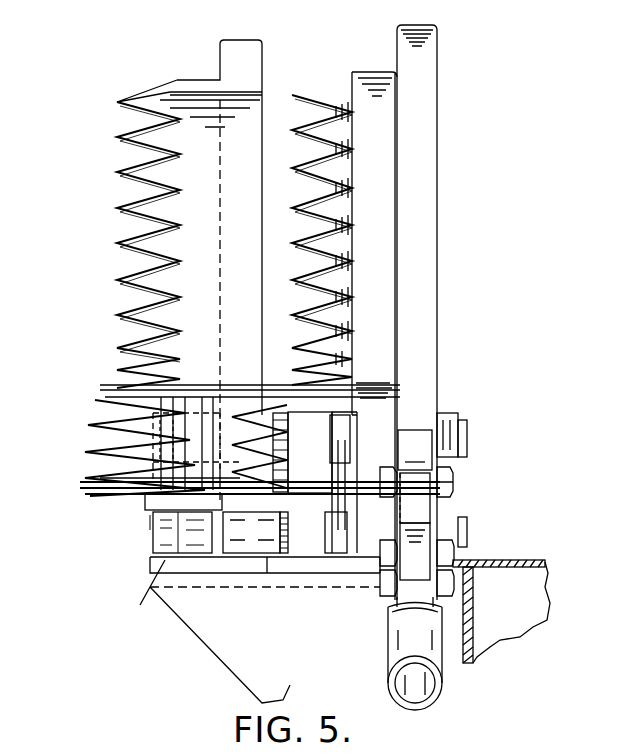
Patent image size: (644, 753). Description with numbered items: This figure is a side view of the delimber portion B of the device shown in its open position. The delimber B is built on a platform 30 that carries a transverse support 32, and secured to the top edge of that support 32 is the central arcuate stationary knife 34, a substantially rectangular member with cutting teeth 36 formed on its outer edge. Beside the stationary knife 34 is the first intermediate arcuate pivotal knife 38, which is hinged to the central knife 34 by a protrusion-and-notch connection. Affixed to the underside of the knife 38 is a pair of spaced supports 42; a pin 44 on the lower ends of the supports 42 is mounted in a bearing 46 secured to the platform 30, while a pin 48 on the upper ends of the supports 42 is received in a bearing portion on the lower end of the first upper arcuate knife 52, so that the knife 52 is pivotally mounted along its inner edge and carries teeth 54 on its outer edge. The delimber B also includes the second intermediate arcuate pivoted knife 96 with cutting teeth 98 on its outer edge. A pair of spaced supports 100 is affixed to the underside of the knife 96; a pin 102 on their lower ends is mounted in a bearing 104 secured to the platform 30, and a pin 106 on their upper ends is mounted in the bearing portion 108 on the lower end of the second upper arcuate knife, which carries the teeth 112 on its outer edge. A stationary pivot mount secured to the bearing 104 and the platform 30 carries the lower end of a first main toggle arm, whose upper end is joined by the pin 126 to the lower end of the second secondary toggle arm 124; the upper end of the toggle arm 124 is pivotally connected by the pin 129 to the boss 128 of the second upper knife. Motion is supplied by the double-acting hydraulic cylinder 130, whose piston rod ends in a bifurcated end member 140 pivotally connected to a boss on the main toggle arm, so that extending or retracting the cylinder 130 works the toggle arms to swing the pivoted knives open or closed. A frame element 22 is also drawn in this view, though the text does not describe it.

The frame 22 is at (525, 560).
The base plate 30 is at (270, 575).
The bearing block 32 is at (251, 532).
The plate 34 is at (128, 508).
The plate 36 is at (94, 497).
The shaft 38 is at (98, 452).
The plate 42 is at (120, 470).
The bearing 44 is at (152, 532).
The base corner 46 is at (202, 631).
The spring seat 48 is at (100, 424).
The guide post 52 is at (220, 66).
The compression spring 54 is at (134, 99).
The bracket 96 is at (314, 452).
The plate 98 is at (245, 400).
The bracket arm 100 is at (332, 477).
The plate 102 is at (467, 533).
The nut 104 is at (371, 558).
The plate 106 is at (467, 437).
The bushing 108 is at (443, 413).
The compression spring 112 is at (312, 90).
The sleeve 124 is at (422, 505).
The frame flange 126 is at (470, 567).
The nut 128 is at (428, 440).
The nut 129 is at (448, 480).
The shaft 130 is at (440, 663).
The frame web 140 is at (445, 604).
The guide bar B is at (459, 258).